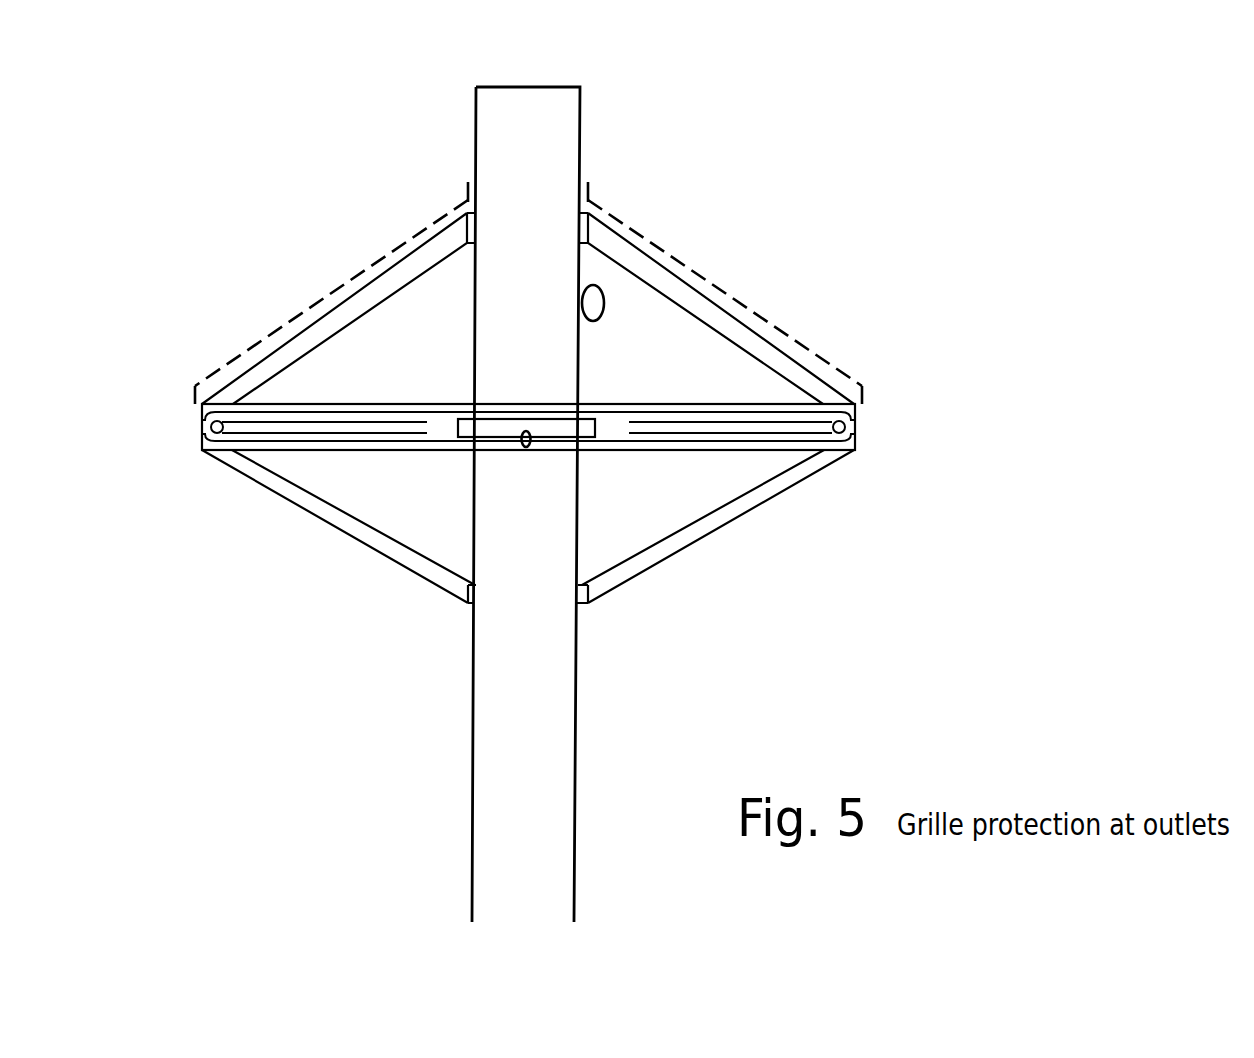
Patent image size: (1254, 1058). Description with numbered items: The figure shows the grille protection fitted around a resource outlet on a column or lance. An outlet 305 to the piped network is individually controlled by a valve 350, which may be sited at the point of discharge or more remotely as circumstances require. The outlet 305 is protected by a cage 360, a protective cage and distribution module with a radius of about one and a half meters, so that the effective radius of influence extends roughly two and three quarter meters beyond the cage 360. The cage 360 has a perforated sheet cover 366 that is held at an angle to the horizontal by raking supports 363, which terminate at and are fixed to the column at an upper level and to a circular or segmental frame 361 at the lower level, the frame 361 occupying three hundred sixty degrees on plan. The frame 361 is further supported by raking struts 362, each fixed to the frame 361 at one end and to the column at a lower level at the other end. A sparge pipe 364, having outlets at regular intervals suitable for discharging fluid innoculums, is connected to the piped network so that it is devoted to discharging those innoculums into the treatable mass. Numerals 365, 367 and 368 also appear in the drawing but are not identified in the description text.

The outlet 305 is at (528, 293).
The valve 350 is at (526, 504).
The cage 360 is at (528, 448).
The frame 361 is at (202, 450).
The raking strut 362 is at (283, 492).
The raking support 363 is at (800, 381).
The sparge pipe 364 is at (852, 437).
The end tab 365 is at (868, 430).
The perforated sheet cover 366 is at (339, 308).
The fixing block 367 is at (526, 457).
The hole 368 is at (609, 341).